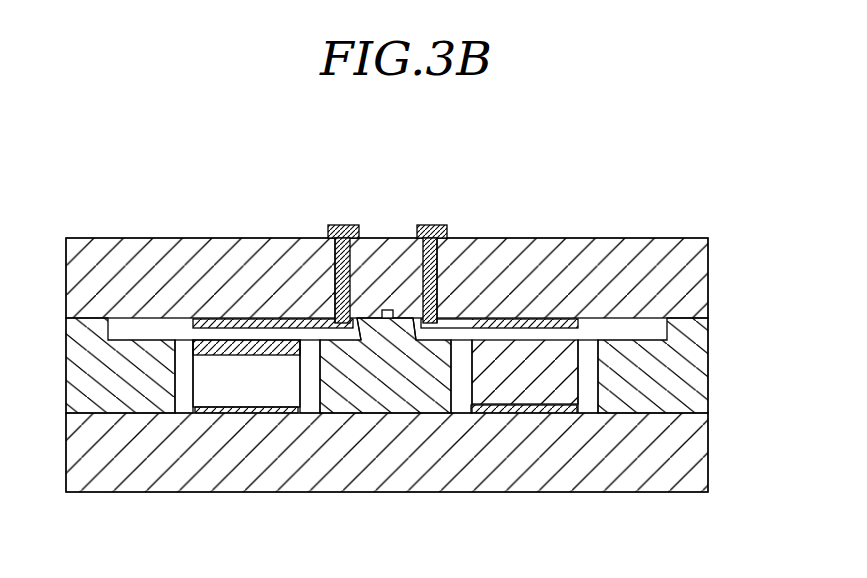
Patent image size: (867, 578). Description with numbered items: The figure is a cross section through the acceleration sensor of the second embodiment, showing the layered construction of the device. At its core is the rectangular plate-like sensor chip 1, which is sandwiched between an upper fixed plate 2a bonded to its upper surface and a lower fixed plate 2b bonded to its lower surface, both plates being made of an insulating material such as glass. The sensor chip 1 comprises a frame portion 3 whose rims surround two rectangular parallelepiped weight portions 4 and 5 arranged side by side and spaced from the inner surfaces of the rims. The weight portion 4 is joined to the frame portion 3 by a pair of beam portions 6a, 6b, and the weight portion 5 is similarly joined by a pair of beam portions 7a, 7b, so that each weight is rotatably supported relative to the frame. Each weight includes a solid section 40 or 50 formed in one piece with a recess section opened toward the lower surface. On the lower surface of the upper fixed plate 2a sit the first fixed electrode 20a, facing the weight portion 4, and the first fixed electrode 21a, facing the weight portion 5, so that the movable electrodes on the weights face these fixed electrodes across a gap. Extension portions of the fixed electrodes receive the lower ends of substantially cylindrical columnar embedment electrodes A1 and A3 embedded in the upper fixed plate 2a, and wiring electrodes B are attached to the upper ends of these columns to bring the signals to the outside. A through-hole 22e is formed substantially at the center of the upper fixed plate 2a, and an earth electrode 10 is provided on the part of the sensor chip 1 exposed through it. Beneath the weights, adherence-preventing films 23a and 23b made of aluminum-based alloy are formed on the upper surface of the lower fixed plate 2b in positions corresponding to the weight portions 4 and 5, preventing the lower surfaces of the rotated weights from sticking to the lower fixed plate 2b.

The sensor chip 1 is at (711, 395).
The upper fixed plate 2a is at (698, 278).
The lower fixed plate 2b is at (698, 448).
The frame portion 3 is at (695, 353).
The weight portion 4 is at (251, 383).
The weight portion 5 is at (520, 388).
The beam portion 6a is at (183, 345).
The beam portion 6b is at (313, 345).
The beam portion 7a is at (460, 345).
The beam portion 7b is at (590, 345).
The earth electrode 10 is at (388, 309).
The first fixed electrode 20a is at (245, 320).
The first fixed electrode 21a is at (528, 320).
The through-hole 22e is at (372, 316).
The adherence-preventing film 23a is at (268, 410).
The adherence-preventing film 23b is at (498, 412).
The solid section 40 is at (213, 404).
The solid section 50 is at (557, 395).
The embedment electrode A1 is at (334, 257).
The embedment electrode A3 is at (439, 258).
The wiring electrode B is at (347, 227).